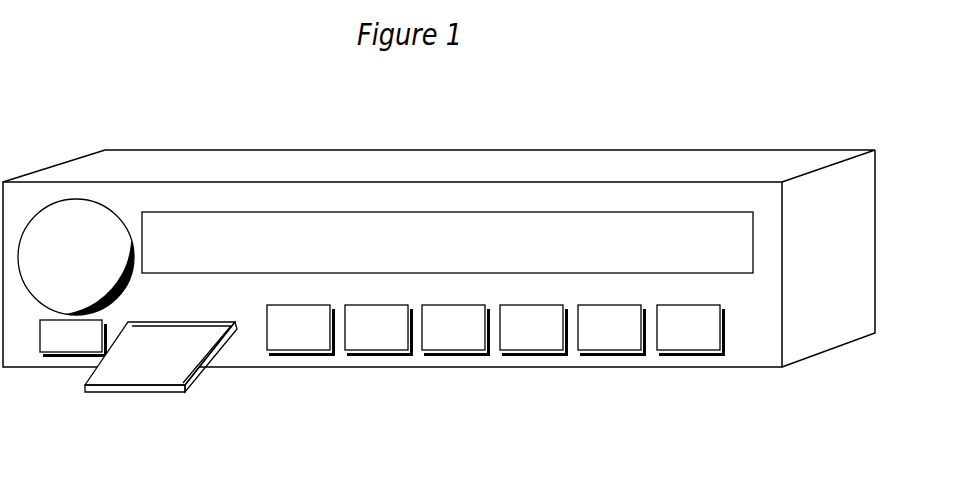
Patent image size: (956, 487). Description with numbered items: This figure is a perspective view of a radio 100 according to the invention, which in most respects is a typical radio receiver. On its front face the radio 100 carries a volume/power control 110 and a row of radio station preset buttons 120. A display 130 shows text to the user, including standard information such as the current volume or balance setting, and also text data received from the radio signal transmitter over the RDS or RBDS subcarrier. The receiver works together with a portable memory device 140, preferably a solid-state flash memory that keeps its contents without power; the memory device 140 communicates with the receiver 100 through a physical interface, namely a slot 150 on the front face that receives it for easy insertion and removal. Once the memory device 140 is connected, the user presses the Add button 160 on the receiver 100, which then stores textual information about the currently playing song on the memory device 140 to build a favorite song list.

The radio 100 is at (315, 160).
The volume/power control 110 is at (65, 226).
The radio station preset buttons 120 is at (302, 353).
The display 130 is at (553, 216).
The portable memory device 140 is at (202, 343).
The slot 150 is at (157, 320).
The Add button 160 is at (63, 353).